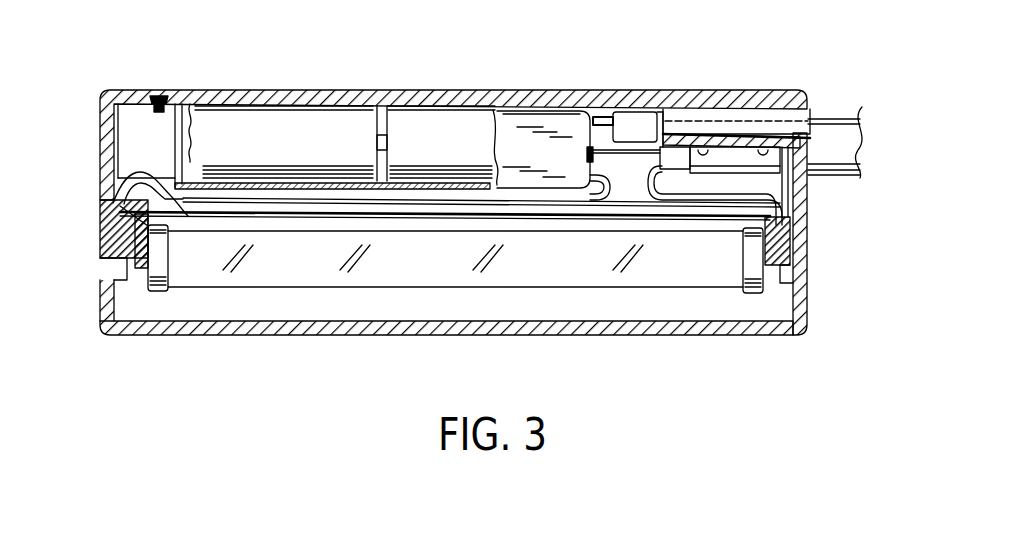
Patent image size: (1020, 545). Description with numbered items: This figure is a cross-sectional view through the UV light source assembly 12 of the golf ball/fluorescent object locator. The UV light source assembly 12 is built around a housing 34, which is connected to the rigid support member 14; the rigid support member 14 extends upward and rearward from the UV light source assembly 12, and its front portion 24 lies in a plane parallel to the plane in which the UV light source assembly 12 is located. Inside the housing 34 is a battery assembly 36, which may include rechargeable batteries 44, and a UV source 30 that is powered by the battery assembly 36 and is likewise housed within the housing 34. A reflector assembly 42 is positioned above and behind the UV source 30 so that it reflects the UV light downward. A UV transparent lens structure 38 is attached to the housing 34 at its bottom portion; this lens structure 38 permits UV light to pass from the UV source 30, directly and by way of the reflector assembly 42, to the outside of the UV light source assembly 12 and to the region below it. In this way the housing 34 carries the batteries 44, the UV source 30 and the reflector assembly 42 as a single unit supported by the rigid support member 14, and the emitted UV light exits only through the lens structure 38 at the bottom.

The UV light source assembly 12 is at (652, 79).
The rigid support member 14 is at (842, 138).
The front portion 24 is at (815, 174).
The UV source 30 is at (632, 290).
The housing 34 is at (778, 95).
The battery assembly 36 is at (189, 94).
The UV transparent lens structure 38 is at (738, 330).
The reflector assembly 42 is at (128, 172).
The rechargeable batteries 44 is at (328, 128).